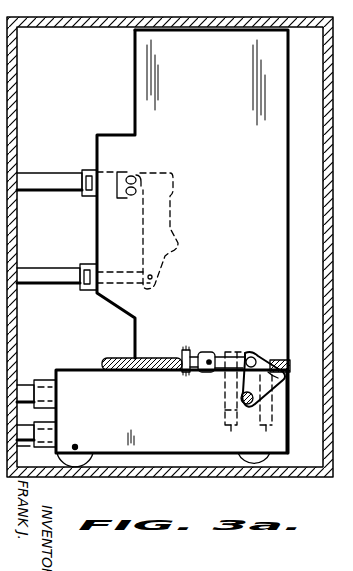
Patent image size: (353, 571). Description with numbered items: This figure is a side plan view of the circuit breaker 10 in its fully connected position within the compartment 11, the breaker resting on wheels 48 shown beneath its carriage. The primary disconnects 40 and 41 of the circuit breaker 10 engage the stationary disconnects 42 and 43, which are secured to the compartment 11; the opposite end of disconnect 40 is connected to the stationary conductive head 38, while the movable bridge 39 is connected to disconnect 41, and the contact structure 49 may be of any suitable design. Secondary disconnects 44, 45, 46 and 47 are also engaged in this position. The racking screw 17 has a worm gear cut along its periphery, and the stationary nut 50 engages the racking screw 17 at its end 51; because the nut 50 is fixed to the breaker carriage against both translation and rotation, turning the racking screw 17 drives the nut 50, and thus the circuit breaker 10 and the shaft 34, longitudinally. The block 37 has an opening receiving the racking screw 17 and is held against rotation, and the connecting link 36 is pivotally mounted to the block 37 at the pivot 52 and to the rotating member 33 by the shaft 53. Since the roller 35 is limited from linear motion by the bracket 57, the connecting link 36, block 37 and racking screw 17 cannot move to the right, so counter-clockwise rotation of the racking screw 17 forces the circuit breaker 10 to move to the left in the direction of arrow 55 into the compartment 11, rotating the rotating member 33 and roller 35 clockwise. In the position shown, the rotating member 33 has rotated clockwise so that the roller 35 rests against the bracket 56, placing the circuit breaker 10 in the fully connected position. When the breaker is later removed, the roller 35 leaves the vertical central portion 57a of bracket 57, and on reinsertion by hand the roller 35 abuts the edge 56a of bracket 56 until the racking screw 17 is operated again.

The circuit breaker 10 is at (245, 170).
The compartment 11 is at (18, 88).
The racking screw 17 is at (158, 371).
The rotating member 33 is at (276, 360).
The shaft 34 is at (227, 424).
The roller 35 is at (254, 357).
The connecting link 36 is at (218, 372).
The block 37 is at (204, 351).
The stationary conductive head 38 is at (118, 171).
The movable bridge 39 is at (173, 220).
The primary disconnect 40 is at (89, 170).
The primary disconnect 41 is at (87, 264).
The stationary disconnect 42 is at (52, 164).
The stationary disconnect 43 is at (52, 258).
The secondary disconnect 44 is at (46, 381).
The secondary disconnect 45 is at (46, 427).
The secondary disconnect 46 is at (26, 385).
The secondary disconnect 47 is at (25, 446).
The roller wheel 48 is at (95, 462).
The contact structure 49 is at (131, 173).
The stationary nut 50 is at (186, 373).
The end 51 is at (179, 349).
The pivot 52 is at (214, 356).
The shaft 53 is at (286, 375).
The arrow 55 is at (196, 323).
The bracket 56 is at (224, 412).
The edge 56a is at (239, 438).
The bracket 57 is at (282, 414).
The vertical central portion 57a is at (275, 434).